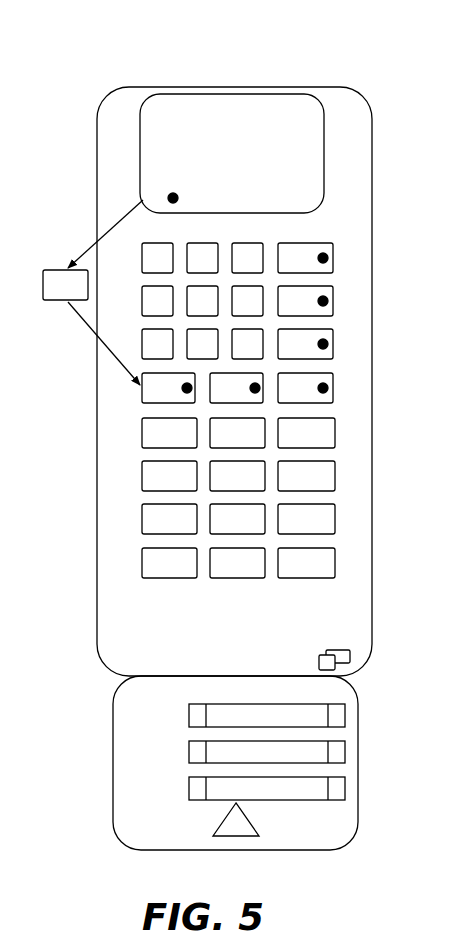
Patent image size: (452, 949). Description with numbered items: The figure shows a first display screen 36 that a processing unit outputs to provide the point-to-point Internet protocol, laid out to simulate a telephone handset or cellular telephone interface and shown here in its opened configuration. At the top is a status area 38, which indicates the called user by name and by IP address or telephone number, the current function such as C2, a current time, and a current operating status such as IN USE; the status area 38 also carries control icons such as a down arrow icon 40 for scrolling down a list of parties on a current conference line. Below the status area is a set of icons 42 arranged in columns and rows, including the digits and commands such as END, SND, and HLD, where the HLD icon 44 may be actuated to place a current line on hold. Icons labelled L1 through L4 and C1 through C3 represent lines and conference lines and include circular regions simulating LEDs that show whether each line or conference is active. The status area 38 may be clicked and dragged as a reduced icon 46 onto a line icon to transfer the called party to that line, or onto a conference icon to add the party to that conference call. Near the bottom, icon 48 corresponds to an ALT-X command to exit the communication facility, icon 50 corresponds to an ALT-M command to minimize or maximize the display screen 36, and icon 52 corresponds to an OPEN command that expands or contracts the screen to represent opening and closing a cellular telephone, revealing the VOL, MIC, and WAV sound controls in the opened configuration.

The display screen 36 is at (225, 62).
The status area 38 is at (310, 154).
The down arrow icon 40 is at (318, 107).
The set of icons 42 is at (337, 473).
The HLD icon 44 is at (337, 518).
The reduced icon 46 is at (65, 303).
The icon 48 is at (118, 645).
The icon 50 is at (352, 652).
The icon 52 is at (237, 852).